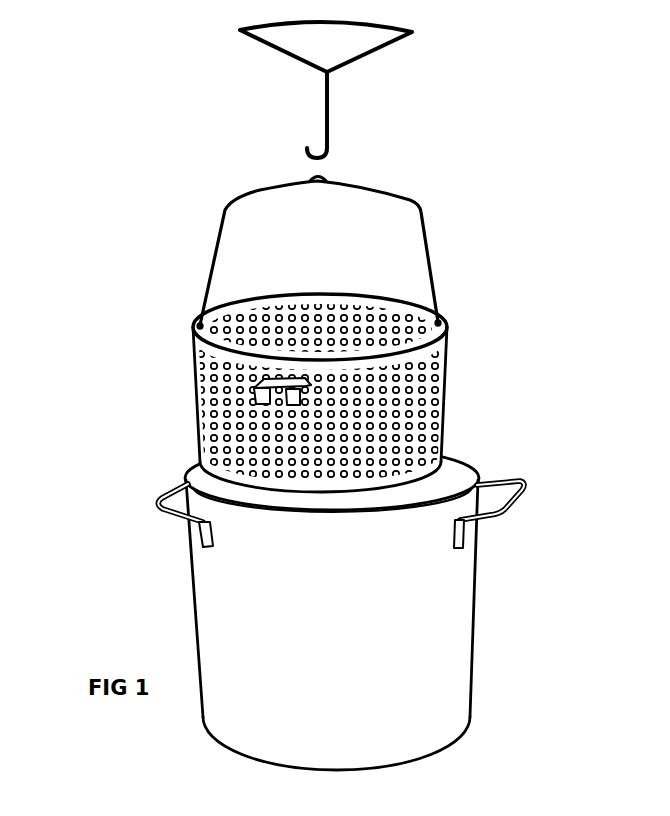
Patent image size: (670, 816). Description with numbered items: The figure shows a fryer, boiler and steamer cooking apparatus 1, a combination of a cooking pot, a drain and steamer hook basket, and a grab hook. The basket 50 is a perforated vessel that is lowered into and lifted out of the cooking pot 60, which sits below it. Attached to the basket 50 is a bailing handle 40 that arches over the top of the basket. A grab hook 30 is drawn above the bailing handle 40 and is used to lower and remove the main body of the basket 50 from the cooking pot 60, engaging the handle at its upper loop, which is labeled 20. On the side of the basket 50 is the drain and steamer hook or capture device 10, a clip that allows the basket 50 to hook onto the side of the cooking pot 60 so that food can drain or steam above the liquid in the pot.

The fryer, boiler and steamer cooking apparatus 1 is at (552, 102).
The drain and steamer hook or capture device 10 is at (258, 385).
The lifting loop 20 is at (316, 183).
The grab hook 30 is at (331, 105).
The bailing handle 40 is at (432, 257).
The basket 50 is at (435, 373).
The cooking pot 60 is at (427, 592).